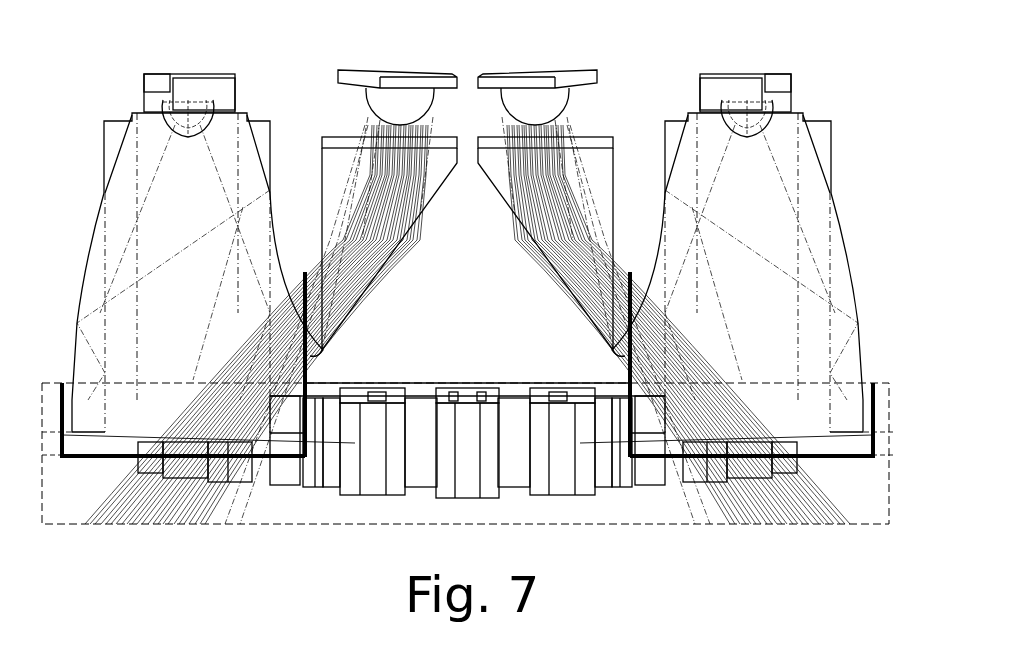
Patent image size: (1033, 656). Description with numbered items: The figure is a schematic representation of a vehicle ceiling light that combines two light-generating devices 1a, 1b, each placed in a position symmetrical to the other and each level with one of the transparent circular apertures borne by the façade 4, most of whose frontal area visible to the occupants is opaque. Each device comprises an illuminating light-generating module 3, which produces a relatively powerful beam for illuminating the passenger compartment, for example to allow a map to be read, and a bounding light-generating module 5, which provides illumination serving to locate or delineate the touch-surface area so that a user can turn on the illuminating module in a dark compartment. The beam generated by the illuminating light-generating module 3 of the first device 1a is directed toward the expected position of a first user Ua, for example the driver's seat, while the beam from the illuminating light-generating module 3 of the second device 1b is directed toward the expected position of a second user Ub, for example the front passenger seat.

The first light-generating device 1a is at (420, 57).
The second light-generating device 1b is at (800, 57).
The illuminating light-generating module 3 is at (404, 256).
The façade 4 is at (900, 383).
The bounding light-generating module 5 is at (72, 183).
The first user Ua is at (183, 455).
The second user Ub is at (752, 455).